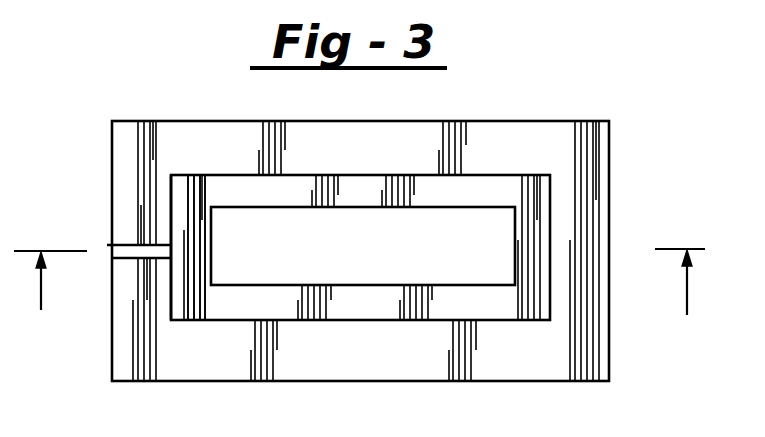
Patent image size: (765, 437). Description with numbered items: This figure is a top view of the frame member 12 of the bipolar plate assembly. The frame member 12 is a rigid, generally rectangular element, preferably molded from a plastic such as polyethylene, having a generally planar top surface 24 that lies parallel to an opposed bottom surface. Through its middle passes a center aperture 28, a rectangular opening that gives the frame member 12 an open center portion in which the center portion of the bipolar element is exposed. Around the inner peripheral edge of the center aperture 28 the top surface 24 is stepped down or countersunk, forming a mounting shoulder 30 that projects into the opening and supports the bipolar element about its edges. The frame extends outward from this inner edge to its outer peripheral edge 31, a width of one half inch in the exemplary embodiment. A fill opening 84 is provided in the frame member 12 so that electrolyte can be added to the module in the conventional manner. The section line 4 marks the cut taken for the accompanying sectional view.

The frame member 12 is at (402, 251).
The top surface 24 is at (600, 143).
The center aperture 28 is at (357, 218).
The mounting shoulder 30 is at (546, 185).
The outer peripheral edge 31 is at (172, 200).
The fill openings 84 is at (158, 252).
The section line 4- 4 is at (359, 260).